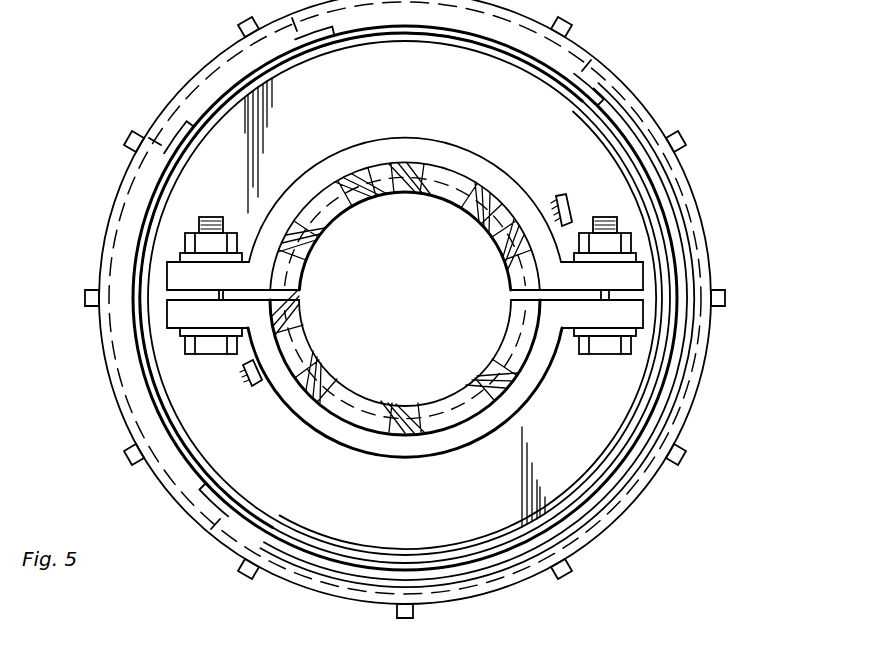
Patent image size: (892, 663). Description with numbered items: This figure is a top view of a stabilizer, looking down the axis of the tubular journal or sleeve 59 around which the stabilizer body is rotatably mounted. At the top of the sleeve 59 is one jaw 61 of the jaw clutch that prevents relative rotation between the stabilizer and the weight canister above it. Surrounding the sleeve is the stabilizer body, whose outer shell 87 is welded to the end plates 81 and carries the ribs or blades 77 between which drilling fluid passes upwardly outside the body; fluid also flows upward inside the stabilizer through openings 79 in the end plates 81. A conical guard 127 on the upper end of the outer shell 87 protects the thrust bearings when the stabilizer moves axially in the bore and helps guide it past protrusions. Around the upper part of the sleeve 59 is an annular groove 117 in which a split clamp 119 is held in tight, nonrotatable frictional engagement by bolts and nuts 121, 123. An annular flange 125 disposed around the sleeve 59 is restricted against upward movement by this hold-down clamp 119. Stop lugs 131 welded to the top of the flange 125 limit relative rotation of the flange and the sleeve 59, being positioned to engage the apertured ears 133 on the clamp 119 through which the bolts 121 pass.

The tubular journal or sleeve 59 is at (503, 320).
The jaw 61 is at (503, 230).
The blades 77 is at (580, 575).
The openings 79 is at (584, 58).
The end plates 81 is at (642, 195).
The outer shell 87 is at (700, 218).
The annular groove 117 is at (441, 152).
The split clamp 119 is at (335, 158).
The bolts 121 is at (190, 345).
The nuts 123 is at (240, 228).
The annular flange 125 is at (562, 112).
The conical guard 127 is at (630, 127).
The stop lugs 131 is at (556, 198).
The apertured ears 133 is at (628, 278).